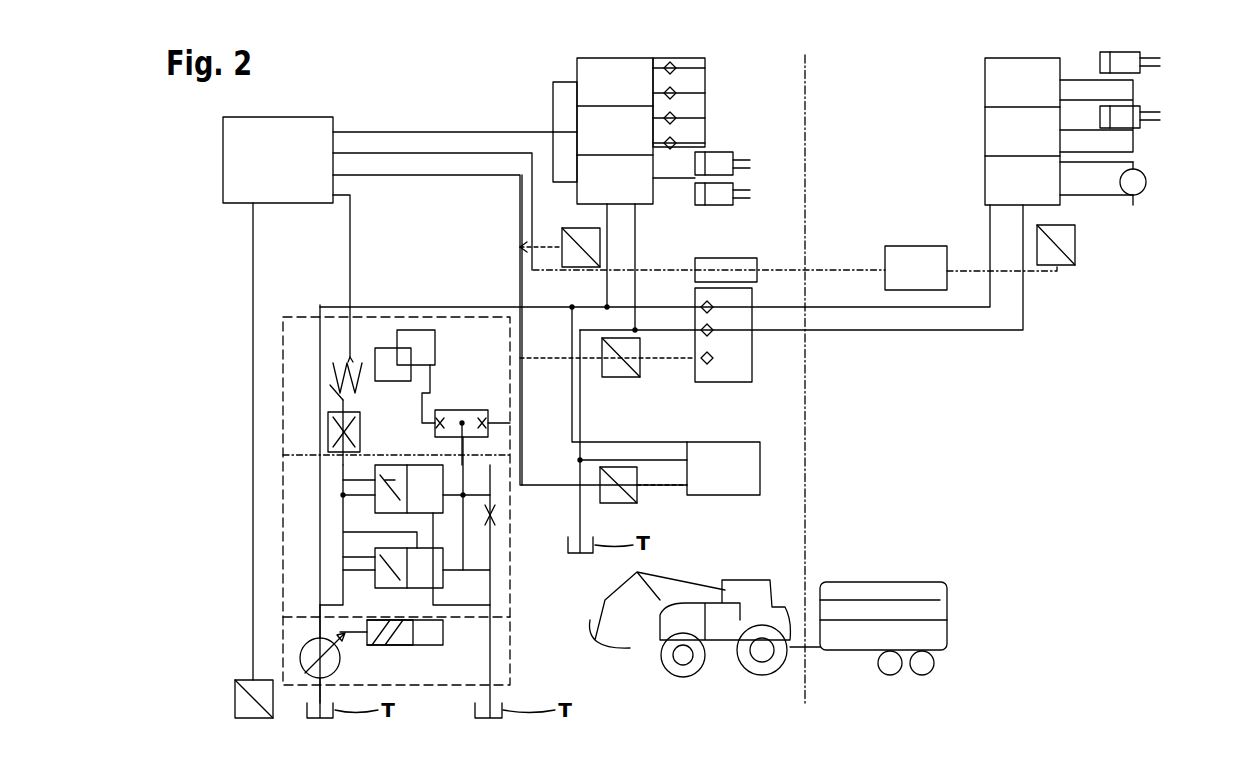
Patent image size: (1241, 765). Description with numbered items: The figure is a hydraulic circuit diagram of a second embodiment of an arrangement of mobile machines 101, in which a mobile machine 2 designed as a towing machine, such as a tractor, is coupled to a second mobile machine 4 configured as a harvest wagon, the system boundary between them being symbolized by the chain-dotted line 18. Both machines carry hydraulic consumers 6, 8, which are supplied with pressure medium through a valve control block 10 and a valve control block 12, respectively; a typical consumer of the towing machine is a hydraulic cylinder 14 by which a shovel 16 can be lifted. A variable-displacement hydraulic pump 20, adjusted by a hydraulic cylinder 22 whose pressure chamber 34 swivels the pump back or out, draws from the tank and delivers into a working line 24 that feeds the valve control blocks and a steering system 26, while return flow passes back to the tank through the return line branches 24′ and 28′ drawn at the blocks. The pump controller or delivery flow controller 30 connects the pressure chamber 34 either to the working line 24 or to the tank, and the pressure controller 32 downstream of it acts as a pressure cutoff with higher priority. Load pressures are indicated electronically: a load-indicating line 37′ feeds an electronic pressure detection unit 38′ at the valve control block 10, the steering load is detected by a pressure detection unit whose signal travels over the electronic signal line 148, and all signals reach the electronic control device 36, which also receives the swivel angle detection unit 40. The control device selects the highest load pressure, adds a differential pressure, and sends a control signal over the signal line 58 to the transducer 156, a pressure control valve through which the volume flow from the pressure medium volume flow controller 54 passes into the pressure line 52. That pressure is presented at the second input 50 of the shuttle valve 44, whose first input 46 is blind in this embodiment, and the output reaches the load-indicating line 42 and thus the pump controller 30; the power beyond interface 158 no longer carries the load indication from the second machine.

The mobile machine 2 is at (658, 682).
The second mobile machine 4 is at (958, 575).
The hydraulic consumers 6 is at (750, 140).
The hydraulic consumers 8 is at (1180, 117).
The valve control block 10 is at (545, 82).
The valve control block 12 is at (948, 108).
The hydraulic cylinder 14 is at (700, 578).
The shovel 16 is at (585, 655).
The chain-dotted line 18 is at (808, 487).
The hydraulic pump 20 is at (300, 658).
The hydraulic cylinder 22 is at (432, 685).
The working line 24 is at (440, 305).
The pressure line branch 24′ is at (605, 286).
The steering system 26 is at (762, 453).
The tank line branch 28′ is at (640, 227).
The pump controller 30 is at (343, 480).
The pressure controller 32 is at (343, 557).
The pressure chamber 34 is at (443, 632).
The electronic control device 36 is at (300, 203).
The load-indicating line 37′ is at (583, 214).
The electronic pressure detection unit 38′ is at (560, 250).
The swivel angle detection unit 40 is at (235, 700).
The load-indicating line 42 is at (465, 442).
The shuttle valve 44 is at (478, 405).
The first input 46 is at (485, 425).
The second input 50 is at (432, 425).
The pressure line 52 is at (343, 400).
The pressure medium volume flow controller 54 is at (328, 432).
The signal line 58 is at (350, 212).
The arrangement of mobile machines 101 is at (1160, 87).
The electronic signal line 148 is at (525, 488).
The transducer 156 is at (381, 325).
The power beyond interface 158 is at (755, 352).